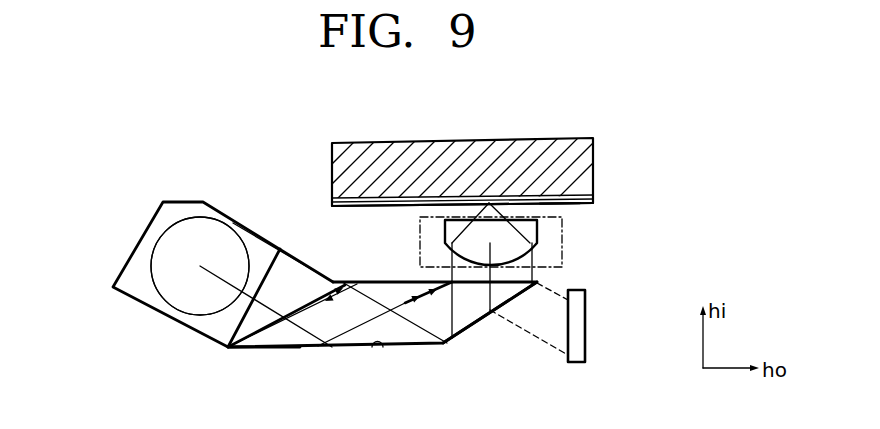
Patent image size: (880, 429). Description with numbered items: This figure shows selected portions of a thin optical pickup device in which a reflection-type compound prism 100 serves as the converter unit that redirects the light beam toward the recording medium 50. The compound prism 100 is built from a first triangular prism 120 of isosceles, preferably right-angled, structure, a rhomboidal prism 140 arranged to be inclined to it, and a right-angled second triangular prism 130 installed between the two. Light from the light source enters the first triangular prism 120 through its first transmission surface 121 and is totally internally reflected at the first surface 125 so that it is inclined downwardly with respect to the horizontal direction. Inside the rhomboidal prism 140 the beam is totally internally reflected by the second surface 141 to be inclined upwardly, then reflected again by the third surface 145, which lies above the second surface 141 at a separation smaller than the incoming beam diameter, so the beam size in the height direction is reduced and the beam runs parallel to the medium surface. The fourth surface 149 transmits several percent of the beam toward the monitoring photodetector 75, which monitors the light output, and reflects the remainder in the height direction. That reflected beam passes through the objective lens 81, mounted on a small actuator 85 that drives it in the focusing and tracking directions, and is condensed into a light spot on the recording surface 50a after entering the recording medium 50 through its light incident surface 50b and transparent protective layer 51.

The reflection-type compound prism 100 is at (155, 175).
The first triangular prism 120 is at (125, 262).
The first transmission surface 121 is at (135, 288).
The first surface 125 is at (135, 288).
The second triangular prism 130 is at (252, 320).
The rhomboidal prism 140 is at (398, 334).
The second surface 141 is at (371, 349).
The third surface 145 is at (464, 320).
The fourth surface 149 is at (481, 318).
The recording medium 50 is at (567, 128).
The transparent protective layer 51 is at (594, 200).
The recording surface 50a is at (579, 205).
The light incident surface 50b is at (564, 205).
The objective lens 81 is at (422, 229).
The actuator 85 is at (420, 255).
The monitoring photodetector 75 is at (586, 323).